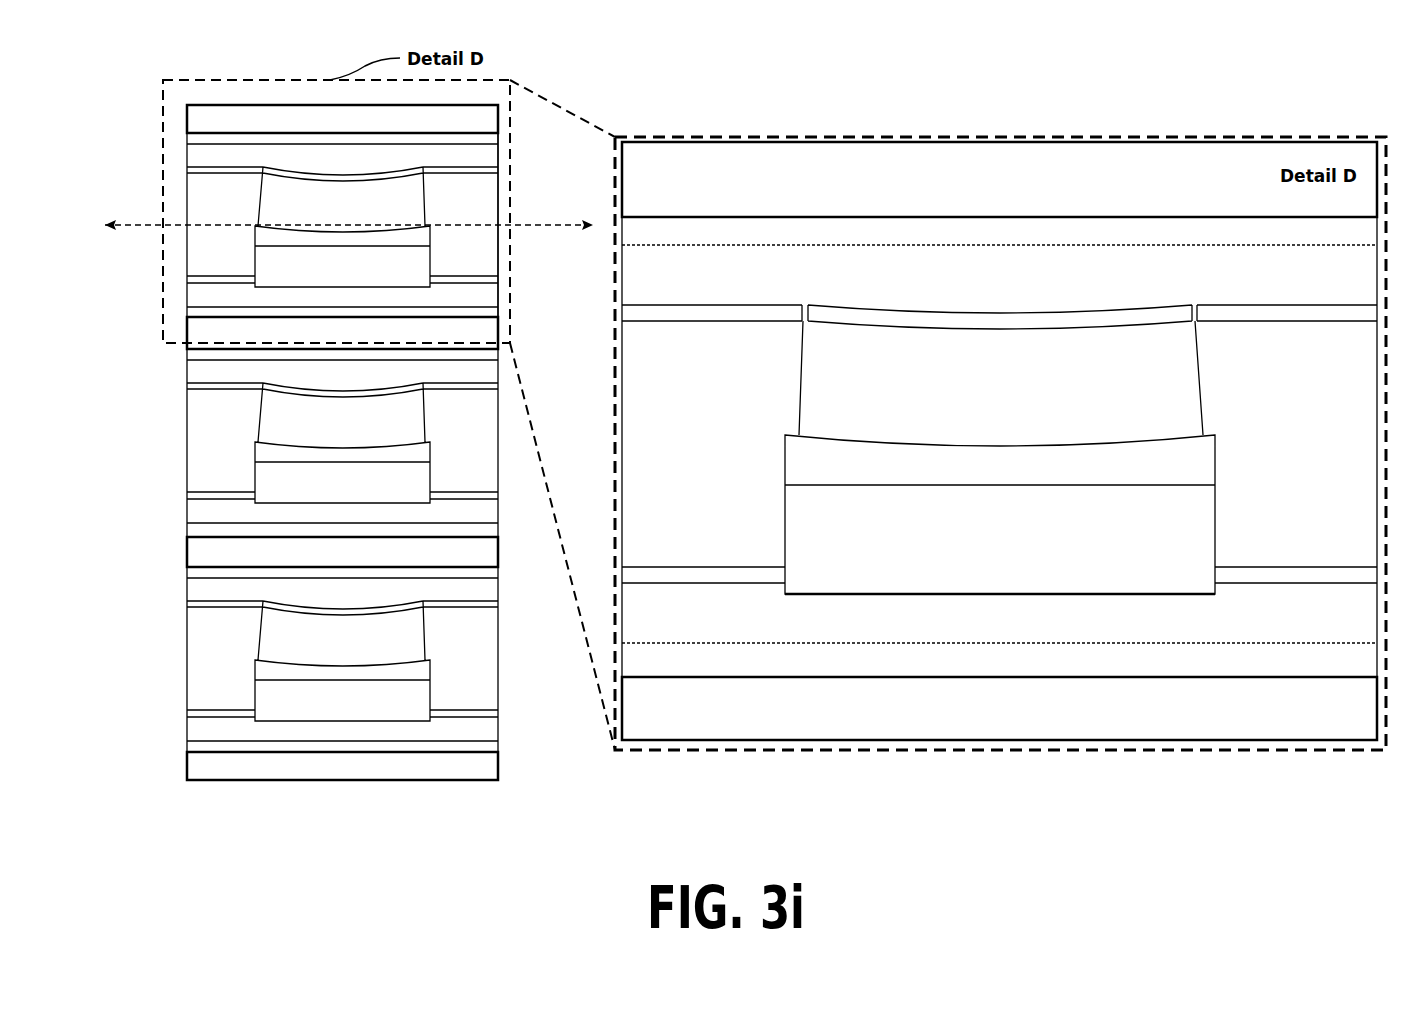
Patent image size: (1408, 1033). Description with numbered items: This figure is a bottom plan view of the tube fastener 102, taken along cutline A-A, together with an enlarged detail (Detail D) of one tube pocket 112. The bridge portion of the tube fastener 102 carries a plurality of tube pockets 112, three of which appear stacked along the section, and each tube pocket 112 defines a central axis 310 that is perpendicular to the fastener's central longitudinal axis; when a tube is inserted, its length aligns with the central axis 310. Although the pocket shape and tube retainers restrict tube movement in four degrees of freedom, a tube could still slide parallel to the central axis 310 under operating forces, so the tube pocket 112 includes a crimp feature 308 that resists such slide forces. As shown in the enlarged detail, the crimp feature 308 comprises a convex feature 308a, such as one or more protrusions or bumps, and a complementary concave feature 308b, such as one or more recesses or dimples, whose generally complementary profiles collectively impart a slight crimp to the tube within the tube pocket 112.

The tube fastener 102 is at (152, 31).
The tube pocket 112 is at (497, 235).
The central axis 310 is at (105, 225).
The crimp feature 308 is at (762, 333).
The convex feature 308a is at (966, 328).
The concave feature 308b is at (1072, 440).